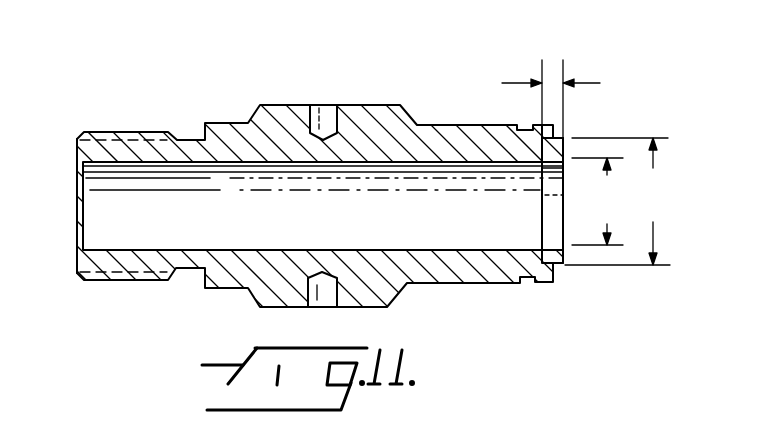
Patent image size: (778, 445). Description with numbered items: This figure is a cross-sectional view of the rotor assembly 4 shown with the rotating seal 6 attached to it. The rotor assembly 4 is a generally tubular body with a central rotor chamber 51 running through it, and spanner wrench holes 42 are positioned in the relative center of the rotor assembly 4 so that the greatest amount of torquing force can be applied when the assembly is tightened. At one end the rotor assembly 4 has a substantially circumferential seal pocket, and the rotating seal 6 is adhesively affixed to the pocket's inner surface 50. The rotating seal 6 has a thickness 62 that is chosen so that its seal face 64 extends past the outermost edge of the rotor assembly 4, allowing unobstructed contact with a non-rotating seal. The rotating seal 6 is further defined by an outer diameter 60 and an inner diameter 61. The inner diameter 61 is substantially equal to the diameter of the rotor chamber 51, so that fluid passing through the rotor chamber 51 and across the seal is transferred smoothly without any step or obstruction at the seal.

The rotor assembly 4 is at (376, 105).
The rotating seal 6 is at (562, 277).
The spanner wrench holes 42 is at (325, 112).
The inner surface 50 is at (561, 139).
The rotor chamber 51 is at (437, 238).
The outer diameter 60 is at (620, 201).
The inner diameter 61 is at (599, 201).
The thickness 62 is at (552, 82).
The seal face 64 is at (568, 258).